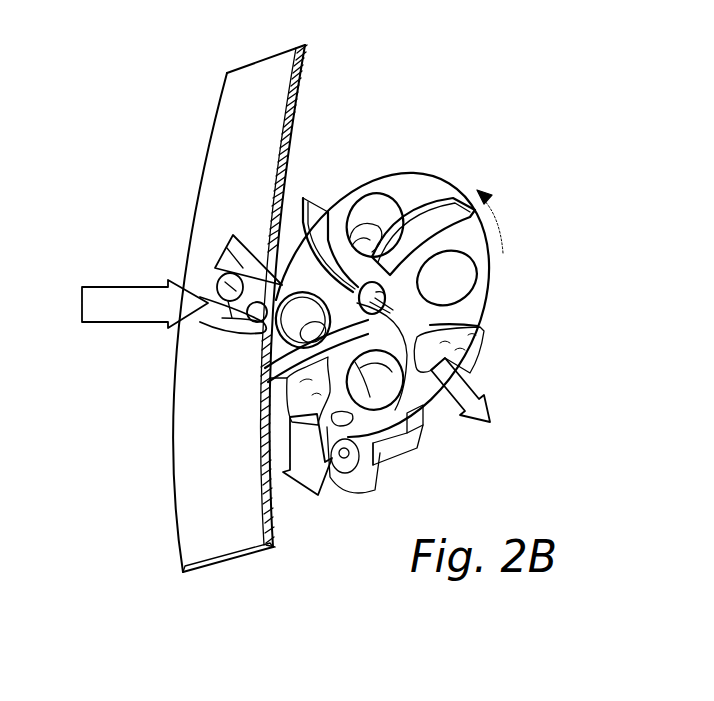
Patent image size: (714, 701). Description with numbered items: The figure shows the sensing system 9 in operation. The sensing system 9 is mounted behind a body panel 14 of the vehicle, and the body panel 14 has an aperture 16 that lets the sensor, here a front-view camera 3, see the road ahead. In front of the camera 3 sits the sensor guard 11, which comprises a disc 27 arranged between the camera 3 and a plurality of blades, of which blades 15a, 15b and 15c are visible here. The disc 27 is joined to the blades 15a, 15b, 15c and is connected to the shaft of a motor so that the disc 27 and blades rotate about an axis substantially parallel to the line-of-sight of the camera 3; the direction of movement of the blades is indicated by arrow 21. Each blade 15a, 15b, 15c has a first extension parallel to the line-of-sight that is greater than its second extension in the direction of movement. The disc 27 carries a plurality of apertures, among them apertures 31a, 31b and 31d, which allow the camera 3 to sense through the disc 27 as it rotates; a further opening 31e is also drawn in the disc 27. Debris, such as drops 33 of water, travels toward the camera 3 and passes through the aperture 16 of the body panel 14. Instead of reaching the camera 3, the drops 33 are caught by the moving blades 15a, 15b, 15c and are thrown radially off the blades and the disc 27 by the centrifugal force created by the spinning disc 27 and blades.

The sensing system 9 is at (446, 73).
The body panel 14 is at (246, 101).
The front-view camera 3 is at (275, 195).
The aperture 16 is at (247, 270).
The drops of water 33 is at (217, 277).
The sensor guard 11 is at (518, 308).
The disc 27 is at (470, 310).
The blade 15a is at (462, 200).
The blade 15b is at (316, 217).
The blade 15c is at (287, 380).
The aperture 31a is at (386, 210).
The aperture 31b is at (300, 333).
The aperture 31d is at (455, 285).
The fifth opening 31e is at (376, 400).
The arrow 21 is at (502, 220).